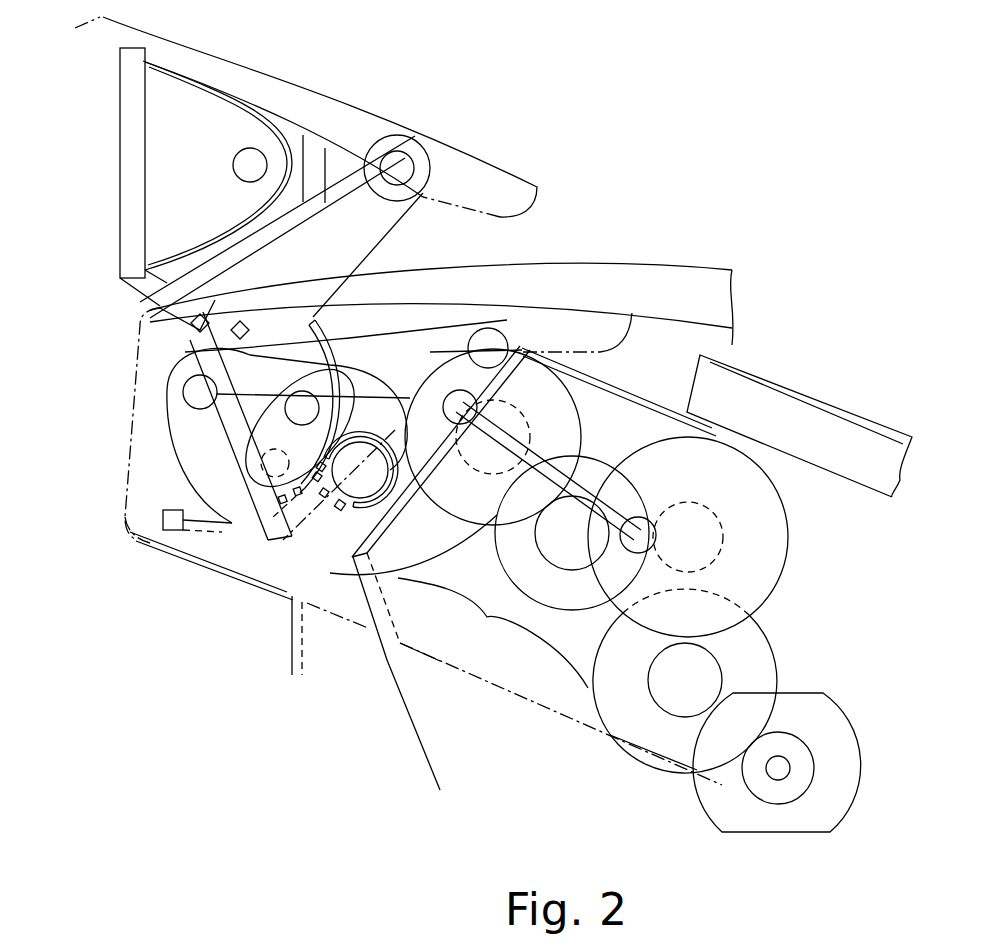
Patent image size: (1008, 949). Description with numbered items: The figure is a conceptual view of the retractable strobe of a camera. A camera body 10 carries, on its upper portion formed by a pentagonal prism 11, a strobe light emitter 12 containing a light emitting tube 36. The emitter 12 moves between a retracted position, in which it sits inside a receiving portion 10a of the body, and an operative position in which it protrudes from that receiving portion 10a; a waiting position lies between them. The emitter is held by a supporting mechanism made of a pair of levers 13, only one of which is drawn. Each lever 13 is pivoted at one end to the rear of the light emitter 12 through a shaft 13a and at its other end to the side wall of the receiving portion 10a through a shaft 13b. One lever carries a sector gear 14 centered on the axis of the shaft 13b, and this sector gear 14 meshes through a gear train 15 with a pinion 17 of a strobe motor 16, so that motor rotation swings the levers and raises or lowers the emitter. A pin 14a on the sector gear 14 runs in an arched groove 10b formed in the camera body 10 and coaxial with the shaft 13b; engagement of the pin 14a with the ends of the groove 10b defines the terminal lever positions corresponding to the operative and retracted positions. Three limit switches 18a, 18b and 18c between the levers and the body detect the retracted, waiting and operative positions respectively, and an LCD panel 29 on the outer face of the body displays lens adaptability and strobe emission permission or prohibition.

The camera body 10 is at (290, 672).
The receiving portion 10a is at (140, 502).
The arched groove 10b is at (240, 445).
The pentagonal prism 11 is at (400, 735).
The strobe light emitter 12 is at (100, 133).
The lever 13 is at (345, 160).
The shaft 13a is at (402, 160).
The shaft 13b is at (182, 395).
The sector gear 14 is at (302, 548).
The pin 14a is at (185, 352).
The gear train 15 is at (493, 633).
The strobe motor 16 is at (845, 752).
The pinion 17 is at (792, 752).
The first limit switch 18a is at (147, 537).
The second limit switch 18b is at (250, 322).
The third limit switch 18c is at (158, 310).
The LCD panel 29 is at (810, 440).
The light emitting tube 36 is at (252, 157).